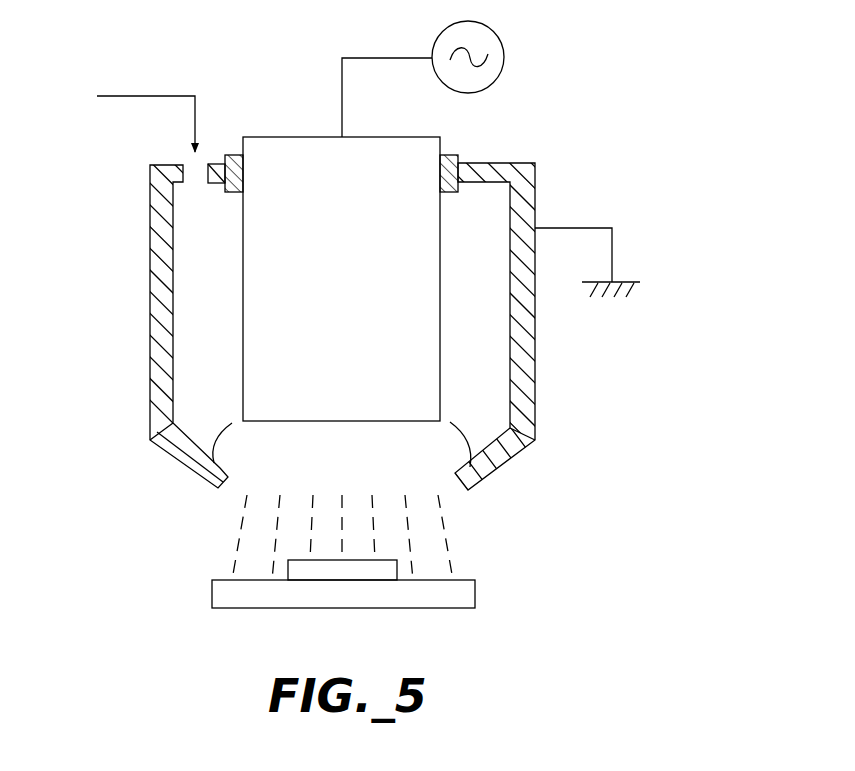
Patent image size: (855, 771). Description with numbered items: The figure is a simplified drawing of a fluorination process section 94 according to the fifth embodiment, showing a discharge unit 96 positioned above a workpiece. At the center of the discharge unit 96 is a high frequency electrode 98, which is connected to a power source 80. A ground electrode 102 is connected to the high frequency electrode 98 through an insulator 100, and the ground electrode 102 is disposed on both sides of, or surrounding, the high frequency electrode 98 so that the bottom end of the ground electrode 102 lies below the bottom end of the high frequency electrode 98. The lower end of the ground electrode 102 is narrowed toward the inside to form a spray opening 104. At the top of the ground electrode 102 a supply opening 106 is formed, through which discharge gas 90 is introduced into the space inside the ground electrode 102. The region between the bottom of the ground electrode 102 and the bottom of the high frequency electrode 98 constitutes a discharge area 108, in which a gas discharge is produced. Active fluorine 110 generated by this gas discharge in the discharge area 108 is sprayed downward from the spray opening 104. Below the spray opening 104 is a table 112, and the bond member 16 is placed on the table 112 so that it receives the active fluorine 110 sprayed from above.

The bond member 16 is at (352, 572).
The power source 80 is at (462, 95).
The discharge gas 90 is at (181, 95).
The fluorination process section 94 is at (274, 76).
The discharge unit 96 is at (351, 272).
The high frequency electrode 98 is at (402, 143).
The insulator 100 is at (232, 153).
The ground electrode 102 is at (150, 347).
The spray opening 104 is at (458, 483).
The supply opening 106 is at (193, 173).
The discharge area 108 is at (240, 437).
The active fluorine 110 is at (233, 552).
The table 112 is at (425, 600).